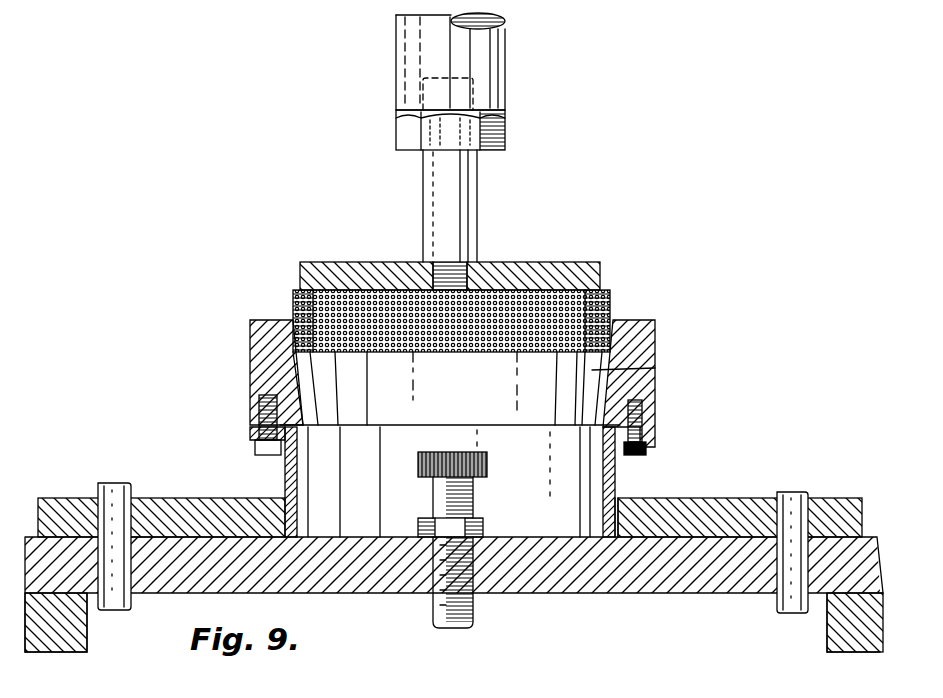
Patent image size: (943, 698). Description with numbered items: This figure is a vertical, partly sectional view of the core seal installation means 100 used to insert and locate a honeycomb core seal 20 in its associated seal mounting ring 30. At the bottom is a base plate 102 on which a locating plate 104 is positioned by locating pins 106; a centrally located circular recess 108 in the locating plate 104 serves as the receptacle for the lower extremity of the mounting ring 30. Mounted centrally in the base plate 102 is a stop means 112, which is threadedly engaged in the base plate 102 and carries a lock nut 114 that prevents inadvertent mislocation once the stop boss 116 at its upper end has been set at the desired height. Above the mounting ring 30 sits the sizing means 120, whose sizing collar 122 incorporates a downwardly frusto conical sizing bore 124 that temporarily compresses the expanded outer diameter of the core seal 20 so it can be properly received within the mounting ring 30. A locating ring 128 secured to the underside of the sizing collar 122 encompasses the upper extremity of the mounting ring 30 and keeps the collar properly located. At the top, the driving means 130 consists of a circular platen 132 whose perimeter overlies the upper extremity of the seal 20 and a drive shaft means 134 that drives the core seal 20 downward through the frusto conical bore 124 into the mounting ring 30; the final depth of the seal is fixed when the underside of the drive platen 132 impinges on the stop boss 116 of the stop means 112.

The core seal 20 is at (610, 297).
The seal mounting ring 30 is at (284, 475).
The core seal installation means 100 is at (229, 408).
The base plate 102 is at (672, 597).
The locating plate 104 is at (695, 510).
The locating pins 106 is at (123, 486).
The circular recess 108 is at (620, 502).
The stop means 112 is at (433, 613).
The lock nut 114 is at (483, 520).
The stop boss 116 is at (480, 463).
The sizing means 120 is at (250, 358).
The sizing collar 122 is at (258, 320).
The frusto conical sizing bore 124 is at (655, 368).
The locating ring 128 is at (657, 440).
The driving means 130 is at (383, 260).
The circular platen 132 is at (500, 262).
The drive shaft means 134 is at (500, 83).